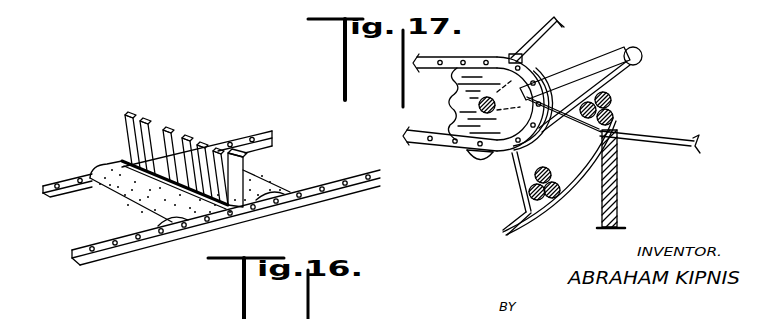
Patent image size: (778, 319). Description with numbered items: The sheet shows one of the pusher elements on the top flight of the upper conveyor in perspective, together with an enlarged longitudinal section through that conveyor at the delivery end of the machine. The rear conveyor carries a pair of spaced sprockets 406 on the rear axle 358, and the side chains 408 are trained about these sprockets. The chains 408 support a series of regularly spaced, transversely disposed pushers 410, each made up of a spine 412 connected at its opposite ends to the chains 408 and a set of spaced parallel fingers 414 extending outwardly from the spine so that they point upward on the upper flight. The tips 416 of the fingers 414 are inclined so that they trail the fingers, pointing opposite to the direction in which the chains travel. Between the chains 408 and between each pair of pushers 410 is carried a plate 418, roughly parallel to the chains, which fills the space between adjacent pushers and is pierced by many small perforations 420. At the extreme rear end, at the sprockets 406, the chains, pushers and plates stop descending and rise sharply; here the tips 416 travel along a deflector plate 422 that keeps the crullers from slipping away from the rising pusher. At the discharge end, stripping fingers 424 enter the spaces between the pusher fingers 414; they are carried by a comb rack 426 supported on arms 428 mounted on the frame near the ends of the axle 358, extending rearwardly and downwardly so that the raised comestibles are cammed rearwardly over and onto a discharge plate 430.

In FIG. 17, the rear axle 358 is at (488, 97).
In FIG. 17, the sprockets 406 is at (439, 146).
In FIG. 16, the side chains 408 is at (72, 186).
In FIG. 16, the pushers 410 is at (148, 110).
In FIG. 17, the pushers 410 is at (517, 182).
In FIG. 16, the spine 412 is at (127, 161).
In FIG. 16, the fingers 414 is at (200, 139).
In FIG. 16, the tips 416 is at (245, 157).
In FIG. 16, the plate 418 is at (170, 230).
In FIG. 16, the perforations 420 is at (130, 181).
In FIG. 17, the perforations 420 is at (478, 163).
In FIG. 17, the deflector plate 422 is at (557, 203).
In FIG. 17, the stripping fingers 424 is at (608, 62).
In FIG. 17, the comb rack 426 is at (641, 55).
In FIG. 17, the arms 428 is at (573, 74).
In FIG. 17, the discharge plate 430 is at (679, 137).